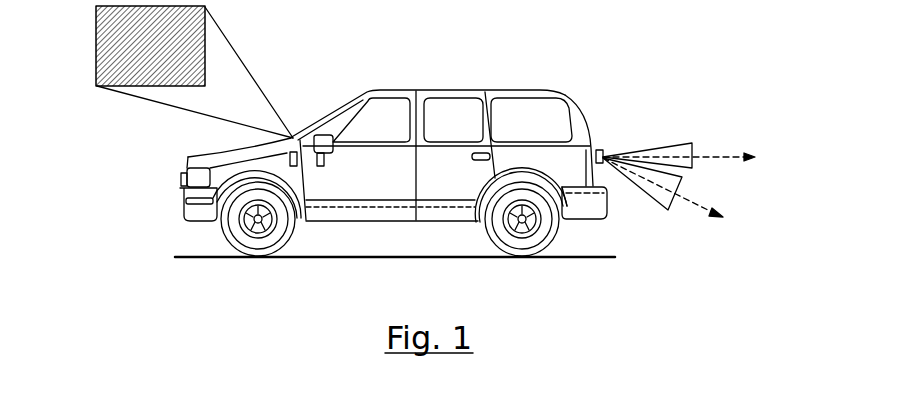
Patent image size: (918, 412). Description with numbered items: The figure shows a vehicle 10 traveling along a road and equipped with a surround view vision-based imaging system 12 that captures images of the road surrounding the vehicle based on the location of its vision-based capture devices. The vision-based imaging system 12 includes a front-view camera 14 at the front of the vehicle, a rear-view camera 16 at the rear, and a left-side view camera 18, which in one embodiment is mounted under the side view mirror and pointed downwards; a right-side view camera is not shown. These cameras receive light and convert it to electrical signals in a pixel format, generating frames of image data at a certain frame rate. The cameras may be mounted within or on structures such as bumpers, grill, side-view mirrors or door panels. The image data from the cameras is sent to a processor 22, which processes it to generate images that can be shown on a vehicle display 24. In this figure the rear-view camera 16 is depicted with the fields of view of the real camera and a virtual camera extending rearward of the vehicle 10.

The vehicle 10 is at (509, 91).
The vision-based imaging system 12 is at (663, 120).
The front-view camera 14 is at (181, 180).
The rear-view camera 16 is at (601, 150).
The left-side view camera 18 is at (320, 166).
The processor 22 is at (289, 157).
The vehicle display 24 is at (96, 45).